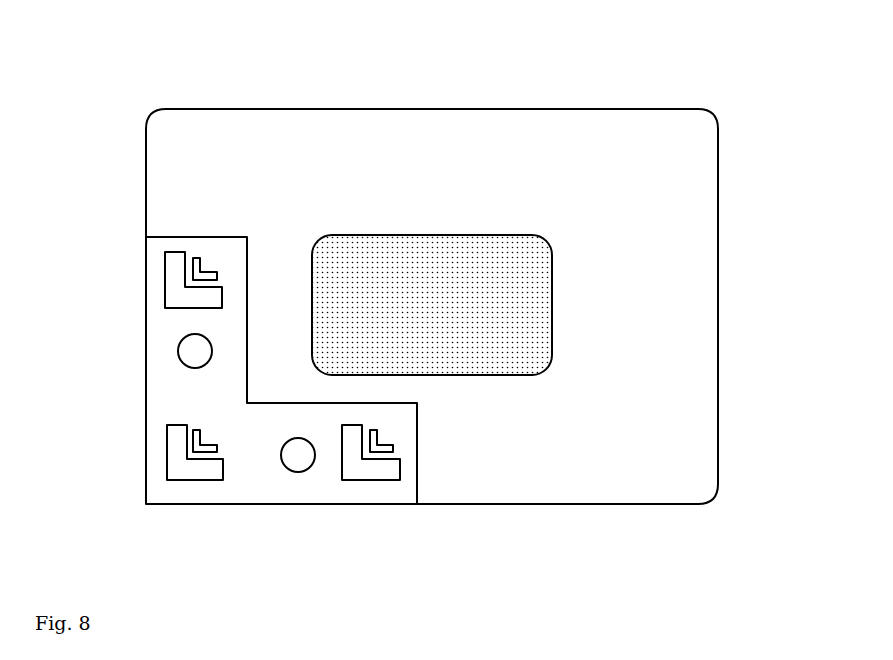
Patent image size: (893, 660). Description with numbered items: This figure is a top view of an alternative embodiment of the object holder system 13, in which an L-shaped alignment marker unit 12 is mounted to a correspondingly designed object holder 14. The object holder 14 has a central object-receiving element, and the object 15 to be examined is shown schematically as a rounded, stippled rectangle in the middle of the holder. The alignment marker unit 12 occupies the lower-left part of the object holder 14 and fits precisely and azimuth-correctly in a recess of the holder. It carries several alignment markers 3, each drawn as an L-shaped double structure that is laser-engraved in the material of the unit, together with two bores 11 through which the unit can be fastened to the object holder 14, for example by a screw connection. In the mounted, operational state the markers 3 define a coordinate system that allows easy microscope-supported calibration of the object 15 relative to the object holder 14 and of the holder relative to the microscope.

The alignment marker 3 is at (165, 273).
The bore 11 is at (193, 352).
The alignment marker unit 12 is at (150, 248).
The object holder system 13 is at (283, 93).
The object holder 14 is at (462, 110).
The object 15 is at (537, 307).